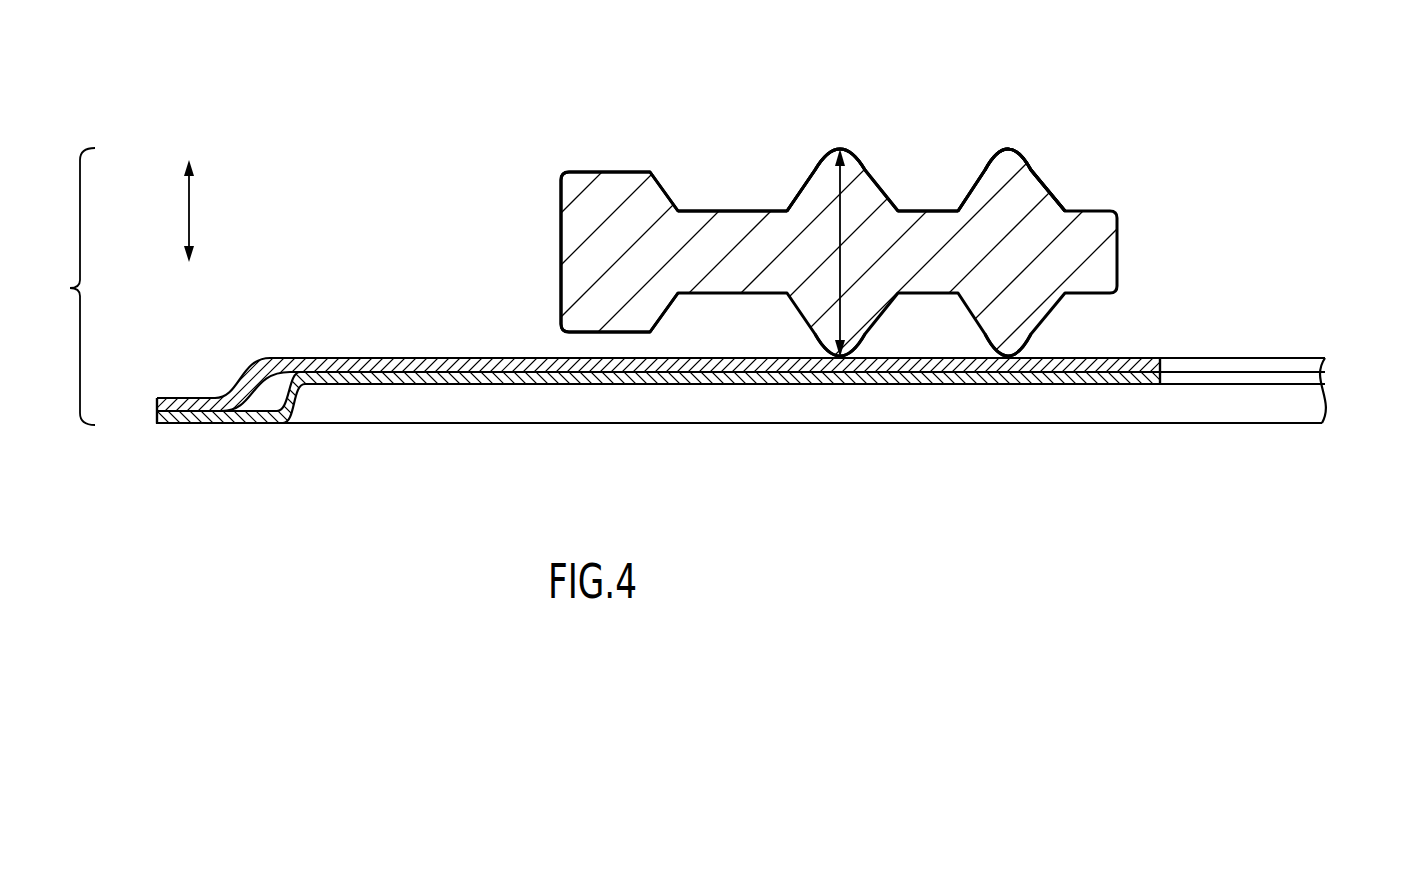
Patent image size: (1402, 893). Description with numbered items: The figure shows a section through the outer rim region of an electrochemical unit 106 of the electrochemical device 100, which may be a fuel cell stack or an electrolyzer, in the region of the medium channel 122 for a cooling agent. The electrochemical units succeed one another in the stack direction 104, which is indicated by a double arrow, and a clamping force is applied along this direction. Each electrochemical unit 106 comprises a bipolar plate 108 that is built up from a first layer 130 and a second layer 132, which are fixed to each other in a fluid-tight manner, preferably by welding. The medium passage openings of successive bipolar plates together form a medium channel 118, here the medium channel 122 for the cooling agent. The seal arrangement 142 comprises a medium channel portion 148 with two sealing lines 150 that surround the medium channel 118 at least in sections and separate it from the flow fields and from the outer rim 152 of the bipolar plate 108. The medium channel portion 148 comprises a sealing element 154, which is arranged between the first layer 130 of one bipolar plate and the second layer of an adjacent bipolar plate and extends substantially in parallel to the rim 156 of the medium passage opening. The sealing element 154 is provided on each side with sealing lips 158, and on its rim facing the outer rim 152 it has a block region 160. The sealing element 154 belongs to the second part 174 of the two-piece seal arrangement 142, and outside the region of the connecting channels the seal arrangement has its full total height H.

The electrochemical device 100 is at (1206, 443).
The stack direction 104 is at (188, 209).
The electrochemical unit 106 is at (70, 288).
The bipolar plate 108 is at (1134, 405).
The medium channel 118 is at (1386, 389).
The medium channel for a cooling agent 122 is at (1386, 431).
The first layer 130 is at (1098, 365).
The second layer 132 is at (1068, 380).
The seal arrangement 142 is at (566, 152).
The medium channel portion 148 is at (1050, 140).
The sealing line 150 is at (841, 148).
The outer rim 152 is at (145, 398).
The sealing element 154 is at (763, 230).
The rim of a medium passage opening 156 is at (1182, 352).
The sealing lip 158 is at (858, 173).
The block region 160 is at (621, 186).
The second part of the seal arrangement 174 is at (698, 228).